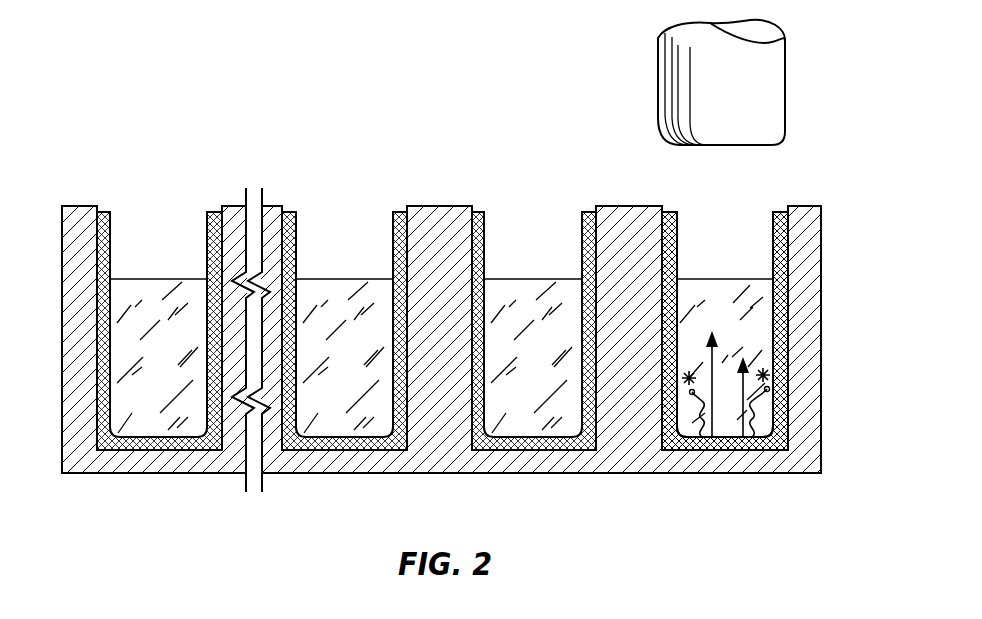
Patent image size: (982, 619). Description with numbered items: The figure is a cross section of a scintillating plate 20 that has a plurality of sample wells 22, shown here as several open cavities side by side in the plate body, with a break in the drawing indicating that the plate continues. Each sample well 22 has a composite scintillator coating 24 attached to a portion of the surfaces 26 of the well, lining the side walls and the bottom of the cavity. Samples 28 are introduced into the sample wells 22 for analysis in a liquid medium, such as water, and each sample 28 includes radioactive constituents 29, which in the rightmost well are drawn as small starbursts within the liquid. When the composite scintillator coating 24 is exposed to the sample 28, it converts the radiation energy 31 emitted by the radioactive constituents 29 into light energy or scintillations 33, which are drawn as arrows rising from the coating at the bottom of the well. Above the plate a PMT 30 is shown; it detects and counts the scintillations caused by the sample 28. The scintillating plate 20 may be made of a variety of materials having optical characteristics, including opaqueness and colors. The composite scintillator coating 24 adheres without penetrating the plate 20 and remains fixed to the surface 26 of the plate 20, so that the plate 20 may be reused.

The scintillating plate 20 is at (280, 138).
The sample wells 22 is at (755, 204).
The composite scintillator coating 24 is at (687, 440).
The surfaces of the sample wells 26 is at (677, 240).
The sample 28 is at (750, 297).
The radioactive constituents 29 is at (768, 362).
The PMT 30 is at (658, 80).
The radiation energy 31 is at (770, 405).
The scintillations 33 is at (737, 420).